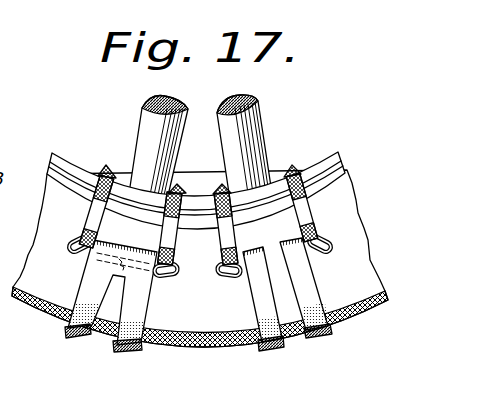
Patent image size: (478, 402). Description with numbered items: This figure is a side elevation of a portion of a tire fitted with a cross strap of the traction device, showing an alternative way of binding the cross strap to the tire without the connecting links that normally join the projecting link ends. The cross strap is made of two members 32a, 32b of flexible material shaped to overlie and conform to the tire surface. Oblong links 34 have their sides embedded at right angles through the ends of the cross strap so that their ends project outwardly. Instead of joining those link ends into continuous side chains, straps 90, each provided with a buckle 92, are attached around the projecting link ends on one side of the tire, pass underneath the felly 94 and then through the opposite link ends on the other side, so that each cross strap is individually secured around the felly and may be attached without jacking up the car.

The felly 94 is at (59, 151).
The buckle 92 is at (217, 187).
The strap 90 is at (222, 233).
The link 34 is at (77, 251).
The cross strap member 32a is at (66, 337).
The cross strap member 32b is at (112, 353).